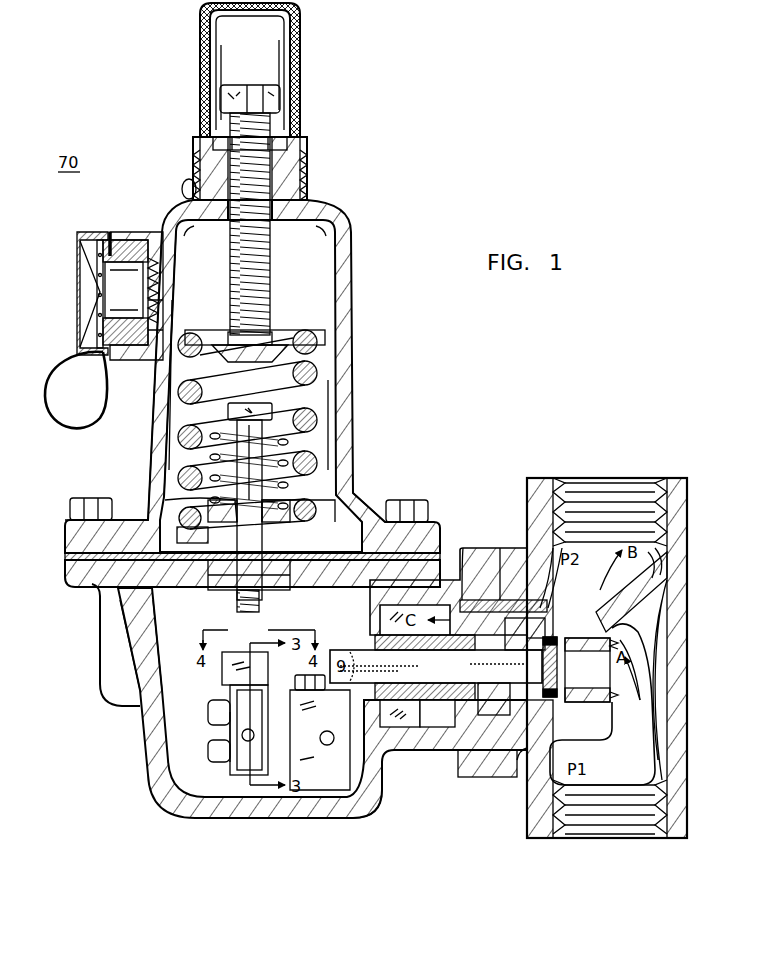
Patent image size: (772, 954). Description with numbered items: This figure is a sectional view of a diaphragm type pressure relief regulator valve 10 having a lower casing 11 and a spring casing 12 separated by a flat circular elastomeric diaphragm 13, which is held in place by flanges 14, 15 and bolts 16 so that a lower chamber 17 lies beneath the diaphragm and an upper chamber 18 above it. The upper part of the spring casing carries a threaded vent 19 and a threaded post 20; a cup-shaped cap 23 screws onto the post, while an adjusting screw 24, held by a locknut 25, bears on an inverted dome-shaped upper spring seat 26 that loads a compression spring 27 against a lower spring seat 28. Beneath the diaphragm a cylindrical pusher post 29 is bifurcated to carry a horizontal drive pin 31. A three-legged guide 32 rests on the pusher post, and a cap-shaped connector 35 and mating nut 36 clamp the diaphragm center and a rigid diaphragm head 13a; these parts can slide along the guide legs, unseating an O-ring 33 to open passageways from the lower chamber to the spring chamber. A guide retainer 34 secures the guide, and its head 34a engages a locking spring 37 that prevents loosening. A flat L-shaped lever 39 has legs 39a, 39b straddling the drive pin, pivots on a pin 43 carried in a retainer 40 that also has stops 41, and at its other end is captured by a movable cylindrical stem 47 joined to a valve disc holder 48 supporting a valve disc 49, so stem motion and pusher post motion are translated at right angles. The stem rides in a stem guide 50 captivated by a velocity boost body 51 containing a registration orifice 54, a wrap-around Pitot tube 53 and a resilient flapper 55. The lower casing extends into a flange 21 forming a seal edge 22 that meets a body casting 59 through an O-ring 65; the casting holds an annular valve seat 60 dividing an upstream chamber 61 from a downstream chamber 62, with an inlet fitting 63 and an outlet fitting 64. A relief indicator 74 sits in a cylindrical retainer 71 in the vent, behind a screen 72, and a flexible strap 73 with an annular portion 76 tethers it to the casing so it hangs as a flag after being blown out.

The regulator valve 10 is at (352, 390).
The lower casing 11 is at (140, 742).
The spring casing 12 is at (160, 442).
The diaphragm 13 is at (100, 586).
The diaphragm head 13a is at (385, 522).
The flange 14 is at (65, 572).
The flange 15 is at (65, 530).
The bolts 16 is at (70, 505).
The lower chamber 17 is at (165, 655).
The upper chamber 18 is at (176, 410).
The vent 19 is at (140, 340).
The post 20 is at (300, 192).
The flange 21 is at (472, 778).
The seal edge 22 is at (514, 777).
The cap 23 is at (300, 46).
The adjusting screw 24 is at (307, 170).
The locknut 25 is at (292, 130).
The upper spring seat 26 is at (300, 330).
The compression spring 27 is at (330, 378).
The lower spring seat 28 is at (200, 500).
The pusher post 29 is at (233, 616).
The drive pin 31 is at (240, 775).
The guide 32 is at (295, 500).
The O-ring 33 is at (215, 592).
The guide retainer 34 is at (265, 452).
The head 34a is at (272, 411).
The connector 35 is at (307, 565).
The nut 36 is at (360, 522).
The locking spring 37 is at (292, 447).
The lever 39 is at (205, 757).
The lever leg 39a is at (212, 712).
The lever leg 39b is at (212, 745).
The retainer 40 is at (318, 775).
The stops 41 is at (222, 672).
The pin 43 is at (352, 795).
The stem 47 is at (432, 715).
The valve disc holder 48 is at (543, 680).
The valve disc 49 is at (572, 702).
The stem guide 50 is at (375, 627).
The velocity boost body 51 is at (512, 566).
The Pitot tube 53 is at (548, 615).
The registration orifice 54 is at (436, 666).
The flapper 55 is at (456, 578).
The body casting 59 is at (690, 527).
The valve seat 60 is at (630, 632).
The upstream chamber 61 is at (662, 760).
The downstream chamber 62 is at (688, 548).
The inlet fitting 63 is at (625, 838).
The outlet fitting 64 is at (642, 478).
The O-ring 65 is at (505, 800).
The retainer 71 is at (77, 237).
The screen 72 is at (98, 283).
The flexible strap 73 is at (46, 372).
The indicator 74 is at (98, 262).
The annular portion 76 is at (112, 232).